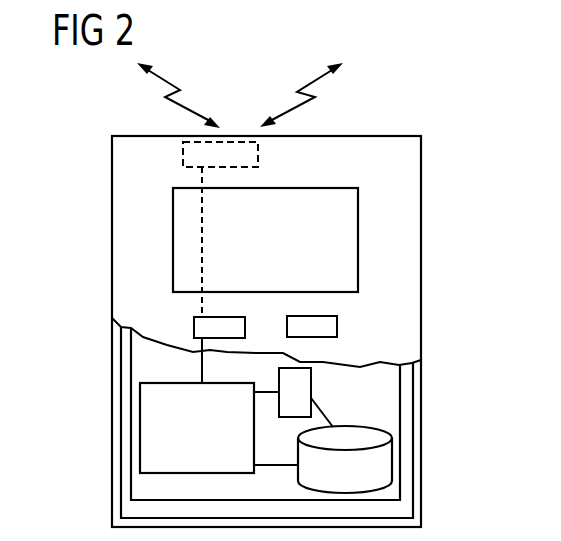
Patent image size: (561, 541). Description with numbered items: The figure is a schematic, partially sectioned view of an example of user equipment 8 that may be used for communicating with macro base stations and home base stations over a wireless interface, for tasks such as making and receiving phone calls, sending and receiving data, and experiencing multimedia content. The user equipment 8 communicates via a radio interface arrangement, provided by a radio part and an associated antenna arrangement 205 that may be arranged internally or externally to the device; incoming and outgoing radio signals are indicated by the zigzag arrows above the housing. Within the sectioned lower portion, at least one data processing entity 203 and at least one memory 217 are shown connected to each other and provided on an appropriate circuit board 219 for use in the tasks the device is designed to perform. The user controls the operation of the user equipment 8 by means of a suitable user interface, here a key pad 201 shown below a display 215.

The user equipment 8 is at (421, 238).
The antenna 205 is at (258, 145).
The display 215 is at (173, 242).
The key pad 201 is at (194, 325).
The circuit board 219 is at (142, 488).
The data processing entity 203 is at (140, 425).
The memory 217 is at (392, 470).